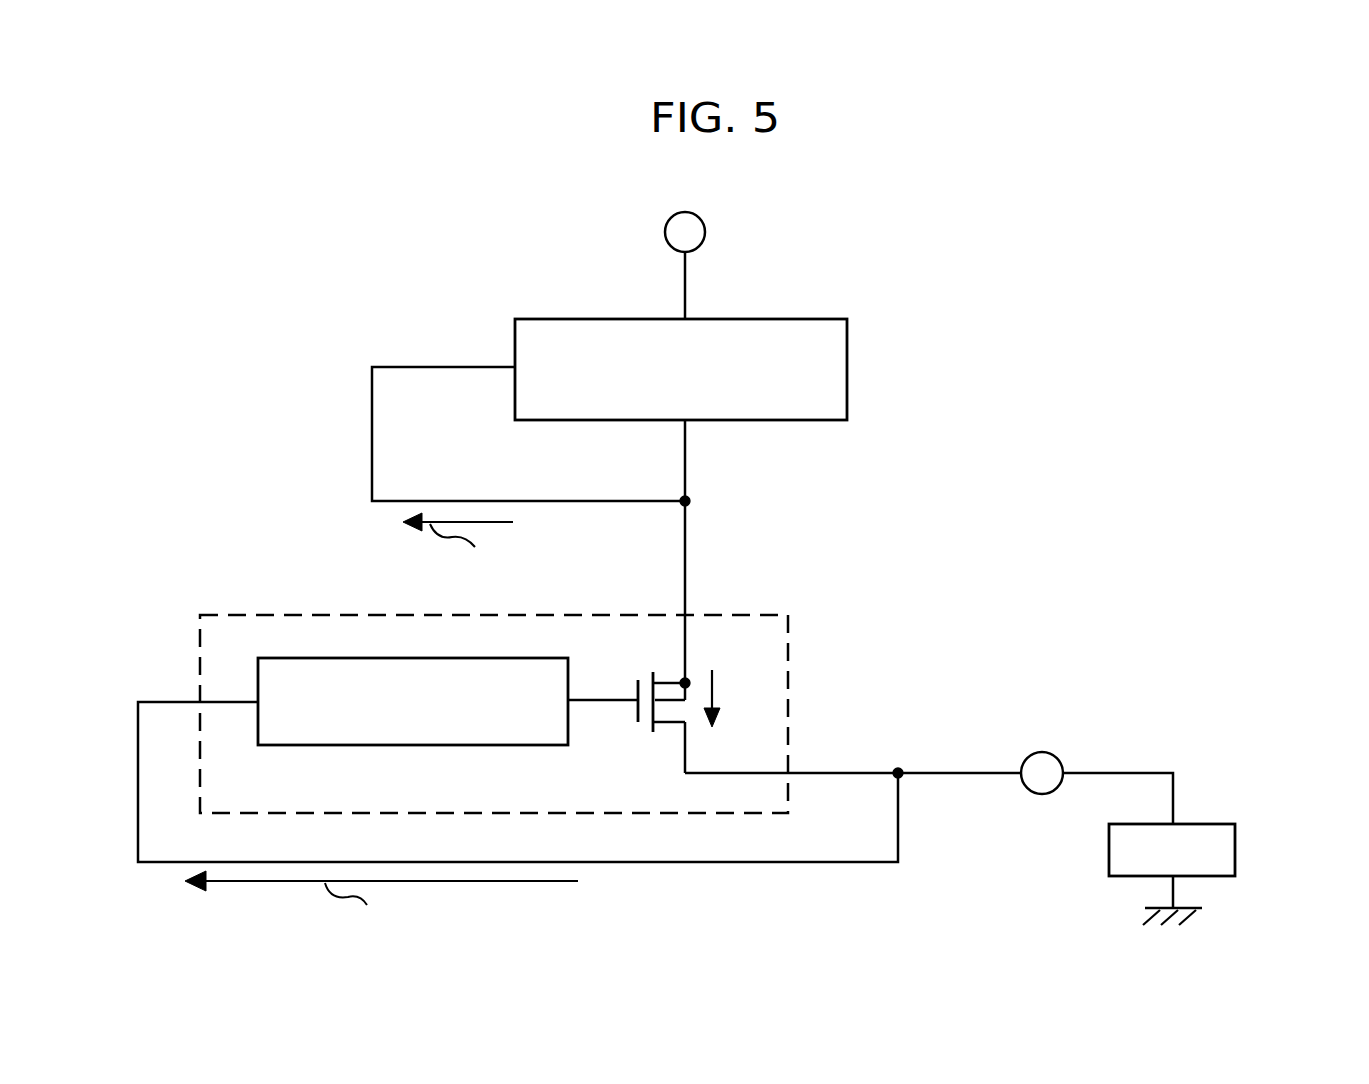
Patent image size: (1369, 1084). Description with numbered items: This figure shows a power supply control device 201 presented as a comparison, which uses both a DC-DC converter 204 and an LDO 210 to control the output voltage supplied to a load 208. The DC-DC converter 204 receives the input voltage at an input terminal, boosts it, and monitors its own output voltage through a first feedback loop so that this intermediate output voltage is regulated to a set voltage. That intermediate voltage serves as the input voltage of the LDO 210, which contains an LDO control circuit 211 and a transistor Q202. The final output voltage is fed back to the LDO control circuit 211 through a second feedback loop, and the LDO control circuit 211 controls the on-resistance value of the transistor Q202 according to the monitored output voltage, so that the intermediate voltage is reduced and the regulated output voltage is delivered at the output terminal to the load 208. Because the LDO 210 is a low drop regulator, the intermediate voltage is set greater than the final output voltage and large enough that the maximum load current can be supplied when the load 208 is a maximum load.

The power supply control device 201 is at (1062, 248).
The DC-DC converter 204 is at (847, 357).
The load 208 is at (1237, 845).
The LDO 210 is at (790, 660).
The LDO control circuit 211 is at (307, 745).
The transistor Q202 is at (629, 707).